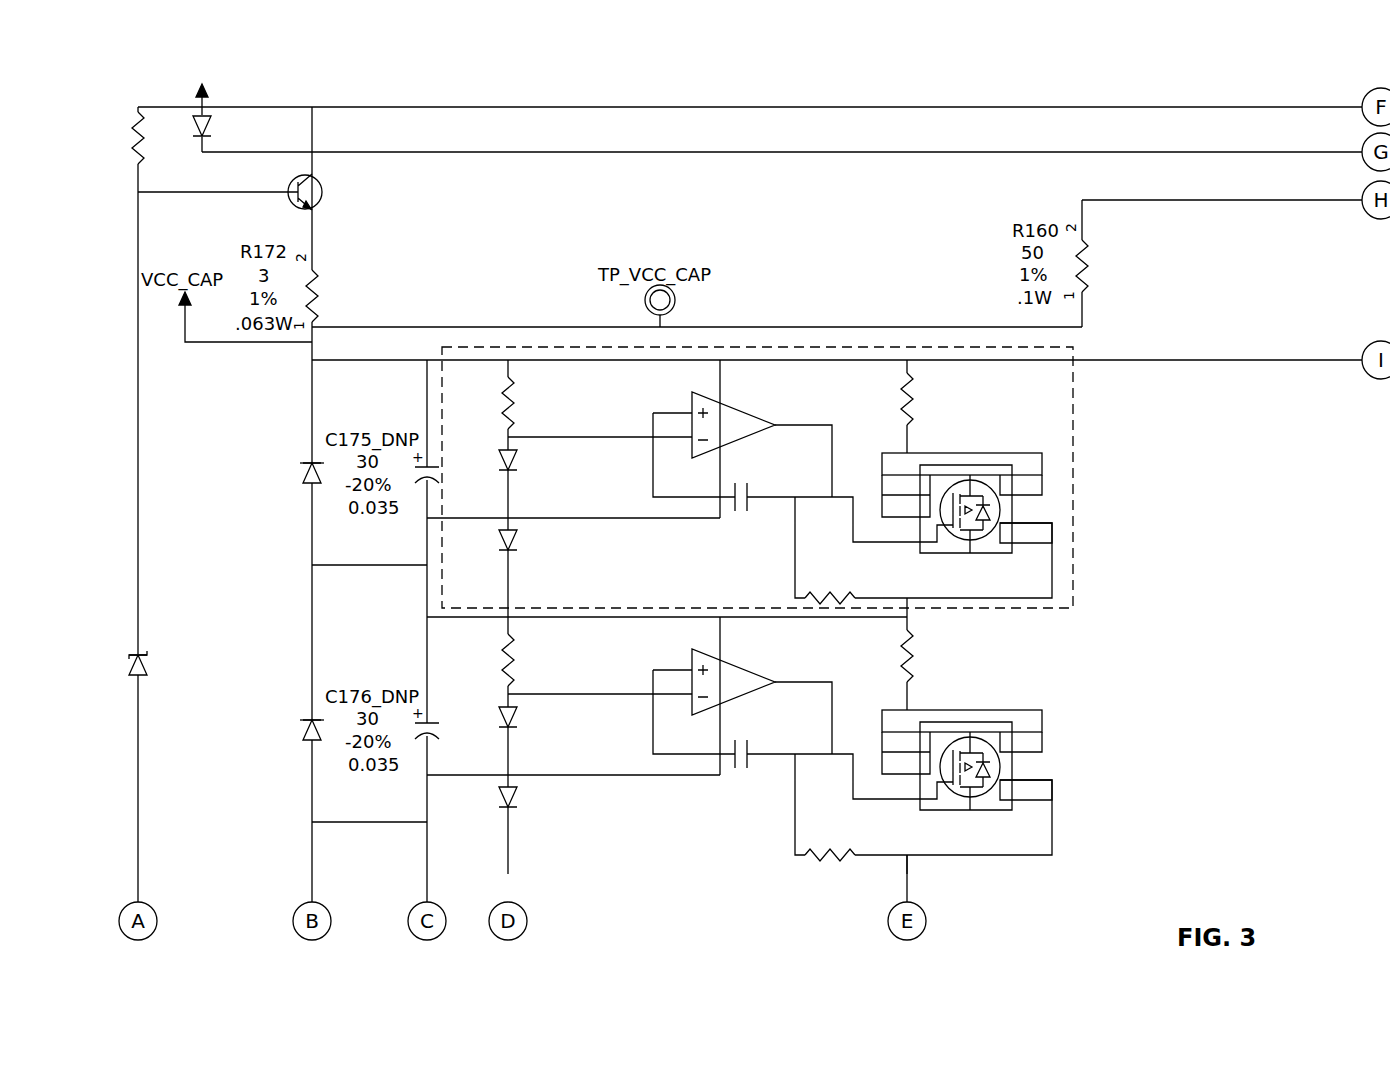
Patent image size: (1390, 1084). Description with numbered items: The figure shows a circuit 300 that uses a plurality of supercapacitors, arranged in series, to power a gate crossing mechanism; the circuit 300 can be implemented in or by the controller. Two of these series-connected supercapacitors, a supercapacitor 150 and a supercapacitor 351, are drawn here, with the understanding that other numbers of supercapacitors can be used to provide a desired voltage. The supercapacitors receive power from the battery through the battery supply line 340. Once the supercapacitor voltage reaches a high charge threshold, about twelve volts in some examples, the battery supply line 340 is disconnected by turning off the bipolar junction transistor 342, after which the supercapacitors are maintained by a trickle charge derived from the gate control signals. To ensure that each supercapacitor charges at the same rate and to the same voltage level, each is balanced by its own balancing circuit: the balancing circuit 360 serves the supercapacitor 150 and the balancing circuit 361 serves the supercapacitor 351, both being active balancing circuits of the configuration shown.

The circuit 300 is at (121, 102).
The VCCB 340 is at (232, 78).
The BJT 342 is at (323, 192).
The supercapacitor 150 is at (251, 436).
The balancing circuit 360 is at (1073, 490).
The balancing circuit 361 is at (1066, 773).
The supercapacitor 351 is at (248, 774).